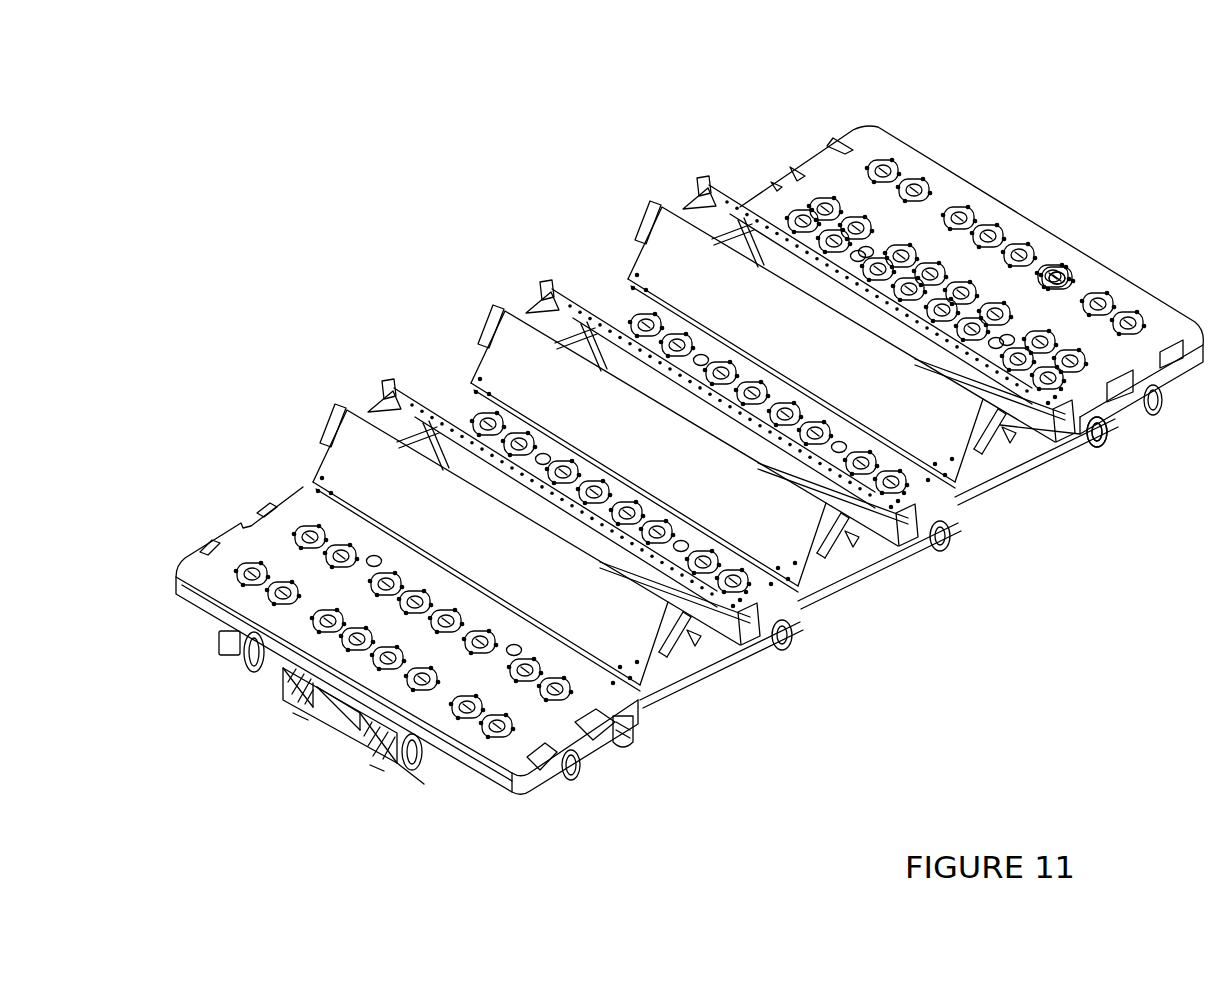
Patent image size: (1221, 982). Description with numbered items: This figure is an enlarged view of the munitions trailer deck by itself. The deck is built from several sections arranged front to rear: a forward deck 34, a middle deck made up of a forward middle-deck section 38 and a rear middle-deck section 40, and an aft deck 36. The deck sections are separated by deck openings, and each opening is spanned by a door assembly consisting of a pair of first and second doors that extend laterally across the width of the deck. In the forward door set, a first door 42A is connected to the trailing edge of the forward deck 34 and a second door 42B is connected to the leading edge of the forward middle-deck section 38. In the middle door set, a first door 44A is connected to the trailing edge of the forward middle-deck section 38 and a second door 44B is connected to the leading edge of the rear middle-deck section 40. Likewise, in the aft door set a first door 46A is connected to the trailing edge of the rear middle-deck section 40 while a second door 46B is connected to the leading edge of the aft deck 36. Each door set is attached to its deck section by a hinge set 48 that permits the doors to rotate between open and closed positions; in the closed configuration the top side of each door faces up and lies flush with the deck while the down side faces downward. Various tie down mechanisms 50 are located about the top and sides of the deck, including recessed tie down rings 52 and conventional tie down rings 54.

The forward deck 34 is at (208, 573).
The aft deck 36 is at (877, 148).
The forward middle-deck section 38 is at (795, 620).
The rear middle-deck section 40 is at (930, 500).
The first door 42A is at (323, 437).
The second door 42B is at (380, 393).
The first door 44A is at (490, 318).
The second door 44B is at (540, 285).
The first door 46A is at (648, 210).
The second door 46B is at (700, 182).
The hinge set 48 is at (626, 750).
The tie down mechanism 50 is at (1062, 270).
The recessed tie down ring 52 is at (1068, 276).
The conventional tie down ring 54 is at (1105, 445).